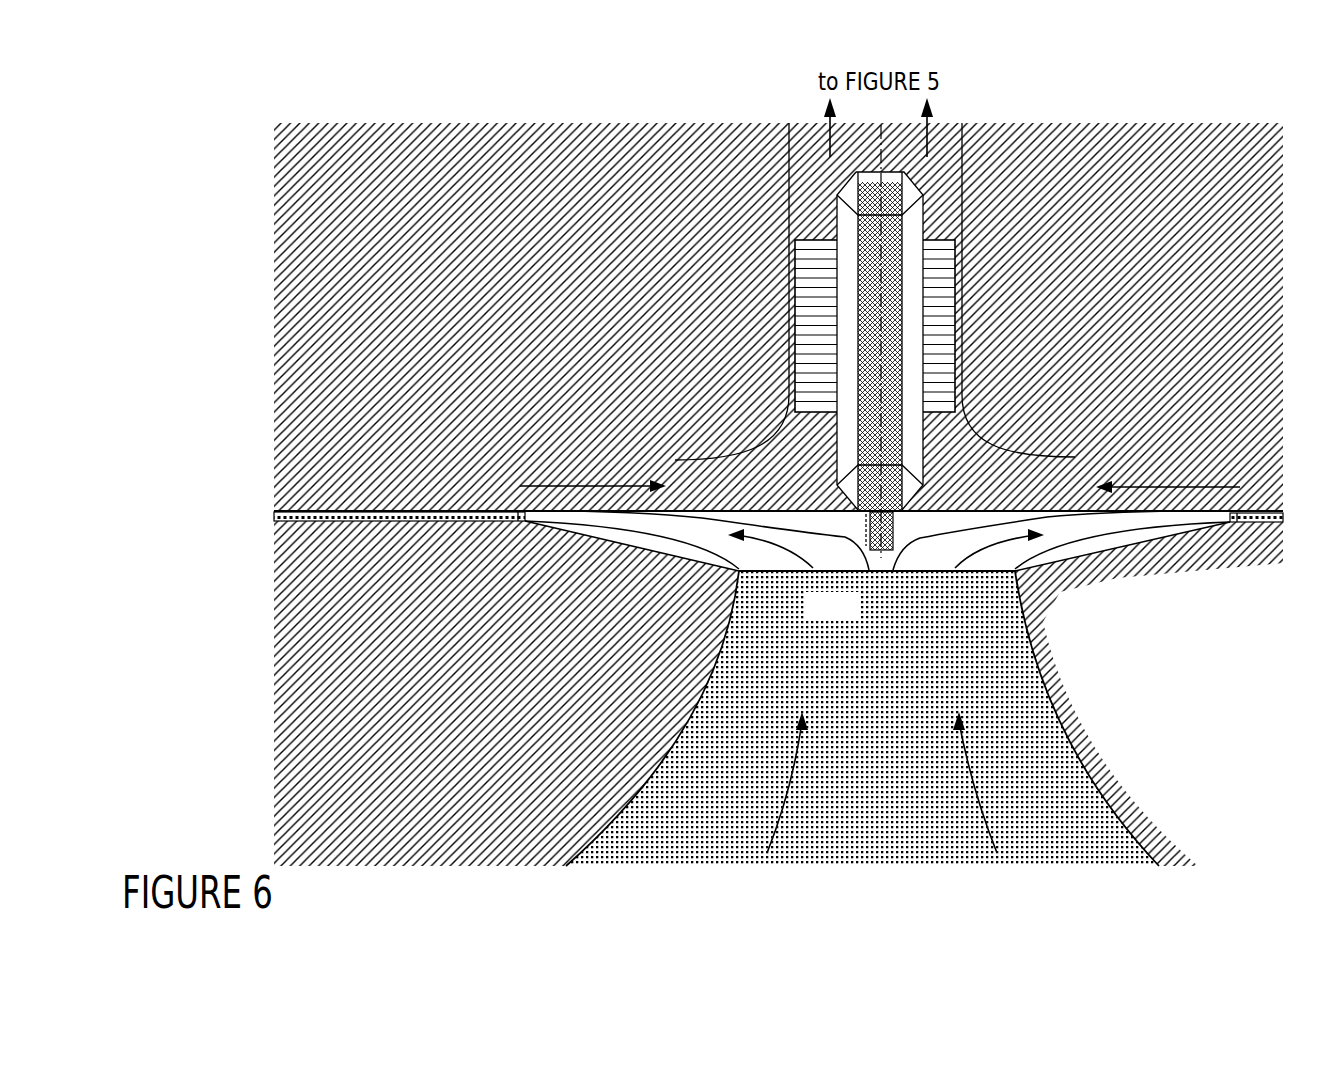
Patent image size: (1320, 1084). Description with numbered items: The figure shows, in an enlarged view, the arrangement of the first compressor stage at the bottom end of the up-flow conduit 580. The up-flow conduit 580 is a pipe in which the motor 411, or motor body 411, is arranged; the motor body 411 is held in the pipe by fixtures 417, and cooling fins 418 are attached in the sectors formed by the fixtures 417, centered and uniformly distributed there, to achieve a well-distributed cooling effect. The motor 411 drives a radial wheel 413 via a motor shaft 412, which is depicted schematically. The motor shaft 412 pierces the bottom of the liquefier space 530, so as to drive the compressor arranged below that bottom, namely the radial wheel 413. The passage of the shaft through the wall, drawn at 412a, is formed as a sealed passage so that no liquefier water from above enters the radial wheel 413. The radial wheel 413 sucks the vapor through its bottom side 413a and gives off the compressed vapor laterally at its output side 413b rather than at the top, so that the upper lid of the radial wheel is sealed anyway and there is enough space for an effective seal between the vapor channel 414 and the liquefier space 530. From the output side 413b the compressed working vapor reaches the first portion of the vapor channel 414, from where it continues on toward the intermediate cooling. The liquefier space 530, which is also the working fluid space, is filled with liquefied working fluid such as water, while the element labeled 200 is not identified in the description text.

The porous body 200 is at (1034, 662).
The motor 411 is at (923, 212).
The motor shaft 412 is at (925, 455).
The passage of the shaft through the wall 412a is at (862, 515).
The radial wheel 413 is at (1195, 526).
The bottom side 413a is at (1017, 584).
The output side 413b is at (525, 521).
The vapor channel 414 is at (350, 514).
The fixtures 417 is at (945, 326).
The cooling fins 418 is at (962, 333).
The liquefier space 530 is at (297, 446).
The up-flow conduit 580 is at (962, 132).